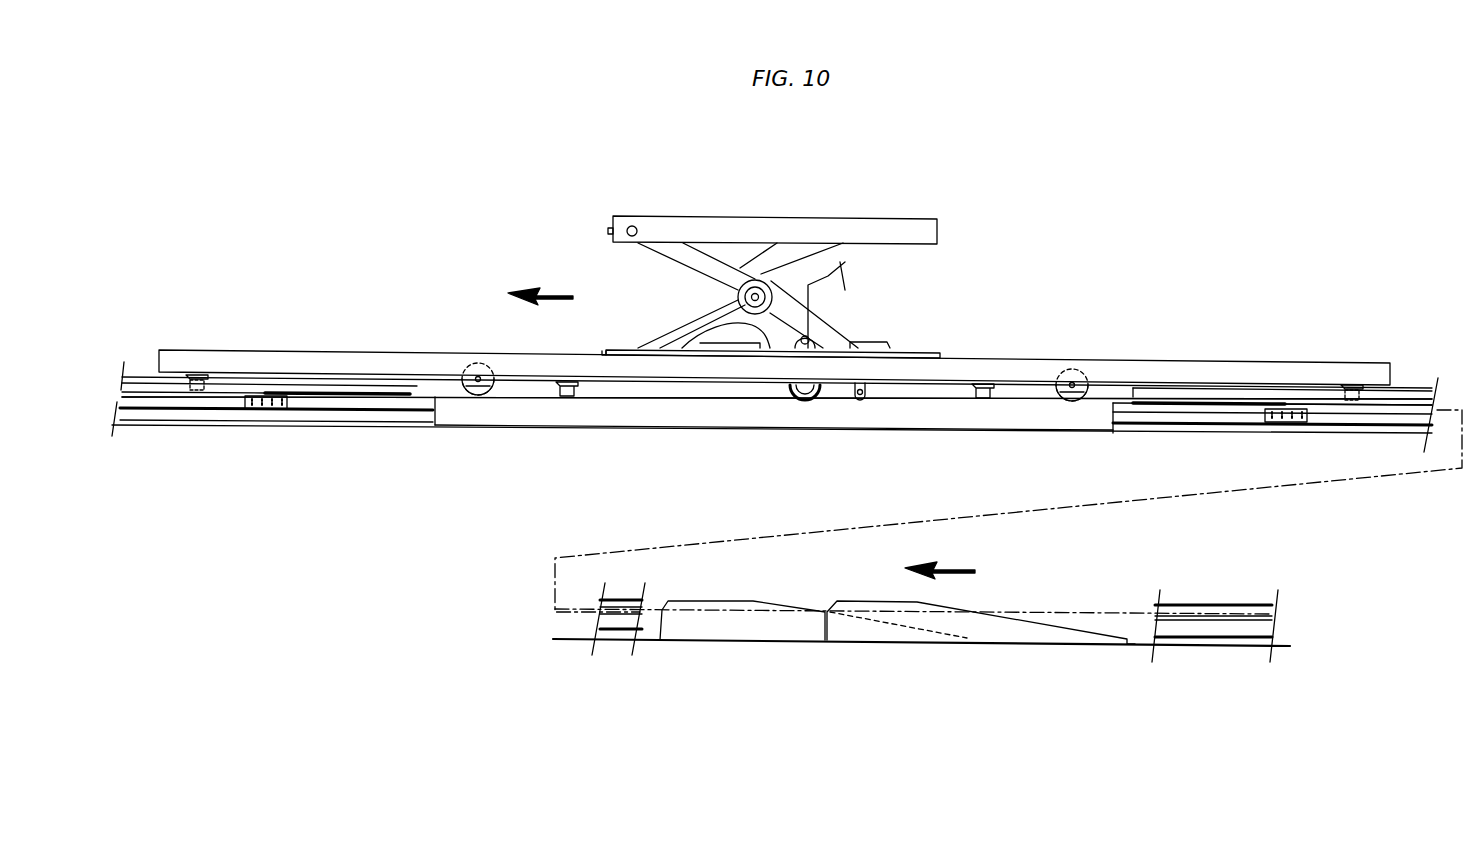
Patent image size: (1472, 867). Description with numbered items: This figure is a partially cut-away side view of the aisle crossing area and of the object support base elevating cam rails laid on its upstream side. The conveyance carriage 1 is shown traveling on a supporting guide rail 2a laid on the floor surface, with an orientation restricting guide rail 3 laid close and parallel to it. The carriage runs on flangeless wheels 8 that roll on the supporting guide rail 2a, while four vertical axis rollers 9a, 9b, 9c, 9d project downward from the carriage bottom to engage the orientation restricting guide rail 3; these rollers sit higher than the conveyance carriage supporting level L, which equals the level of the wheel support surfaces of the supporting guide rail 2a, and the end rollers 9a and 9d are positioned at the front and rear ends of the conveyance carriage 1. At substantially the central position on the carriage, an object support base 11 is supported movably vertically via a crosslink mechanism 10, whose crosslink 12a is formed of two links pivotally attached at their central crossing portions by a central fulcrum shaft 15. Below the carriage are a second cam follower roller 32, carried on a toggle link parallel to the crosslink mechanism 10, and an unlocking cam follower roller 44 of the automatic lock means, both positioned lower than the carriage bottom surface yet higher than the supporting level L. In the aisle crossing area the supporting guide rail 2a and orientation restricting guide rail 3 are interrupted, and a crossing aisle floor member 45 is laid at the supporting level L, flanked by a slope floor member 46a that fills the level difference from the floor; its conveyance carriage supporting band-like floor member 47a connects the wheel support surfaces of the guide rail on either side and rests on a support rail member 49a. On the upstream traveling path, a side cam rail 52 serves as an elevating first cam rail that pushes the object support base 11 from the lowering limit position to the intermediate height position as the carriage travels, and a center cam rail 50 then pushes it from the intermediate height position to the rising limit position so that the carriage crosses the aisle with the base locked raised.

The conveyance carriage 1 is at (276, 352).
The supporting guide rail 2a is at (222, 404).
The orientation restricting guide rail 3 is at (343, 386).
The wheels 8 is at (477, 395).
The vertical axis roller 9a is at (197, 390).
The vertical axis roller 9b is at (566, 397).
The vertical axis roller 9c is at (982, 399).
The vertical axis roller 9d is at (1350, 402).
The crosslink mechanism 10 is at (728, 258).
The object support base 11 is at (775, 232).
The crosslink 12a is at (828, 281).
The central fulcrum shaft 15 is at (757, 296).
The second cam follower roller 32 is at (805, 396).
The unlocking cam follower roller 44 is at (861, 397).
The crossing aisle floor member 45 is at (1020, 399).
The slope floor member 46a is at (678, 412).
The conveyance carriage supporting band-like floor member 47a is at (378, 393).
The support rail member 49a is at (363, 406).
The center cam rail 50 is at (735, 622).
The side cam rail 52 is at (997, 628).
The conveyance carriage supporting level L is at (620, 396).